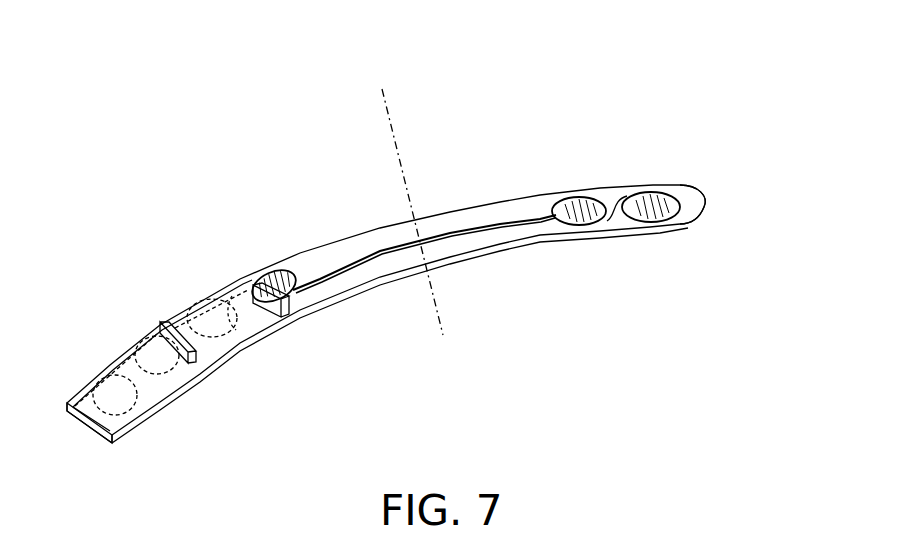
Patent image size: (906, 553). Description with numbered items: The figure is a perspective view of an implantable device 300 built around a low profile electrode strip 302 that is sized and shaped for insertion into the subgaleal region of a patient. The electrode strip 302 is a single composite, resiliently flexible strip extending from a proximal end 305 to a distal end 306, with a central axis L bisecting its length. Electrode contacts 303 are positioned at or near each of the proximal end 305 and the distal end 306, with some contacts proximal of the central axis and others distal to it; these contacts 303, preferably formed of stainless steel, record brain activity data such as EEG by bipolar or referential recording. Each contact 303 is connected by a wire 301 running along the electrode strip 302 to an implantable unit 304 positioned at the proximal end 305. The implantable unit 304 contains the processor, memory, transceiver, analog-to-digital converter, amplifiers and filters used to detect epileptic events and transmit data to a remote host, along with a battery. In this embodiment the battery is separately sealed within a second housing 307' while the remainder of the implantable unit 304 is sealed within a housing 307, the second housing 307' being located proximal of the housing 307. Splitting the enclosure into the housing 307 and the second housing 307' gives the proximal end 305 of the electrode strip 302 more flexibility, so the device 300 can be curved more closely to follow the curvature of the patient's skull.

The implantable device 300 is at (460, 63).
The wire 301 is at (428, 233).
The electrode strip 302 is at (440, 267).
The electrode contact 303 is at (107, 393).
The implantable unit 304 is at (254, 326).
The proximal end 305 is at (88, 429).
The distal end 306 is at (703, 208).
The housing 307 is at (228, 361).
The second housing 307' is at (144, 404).